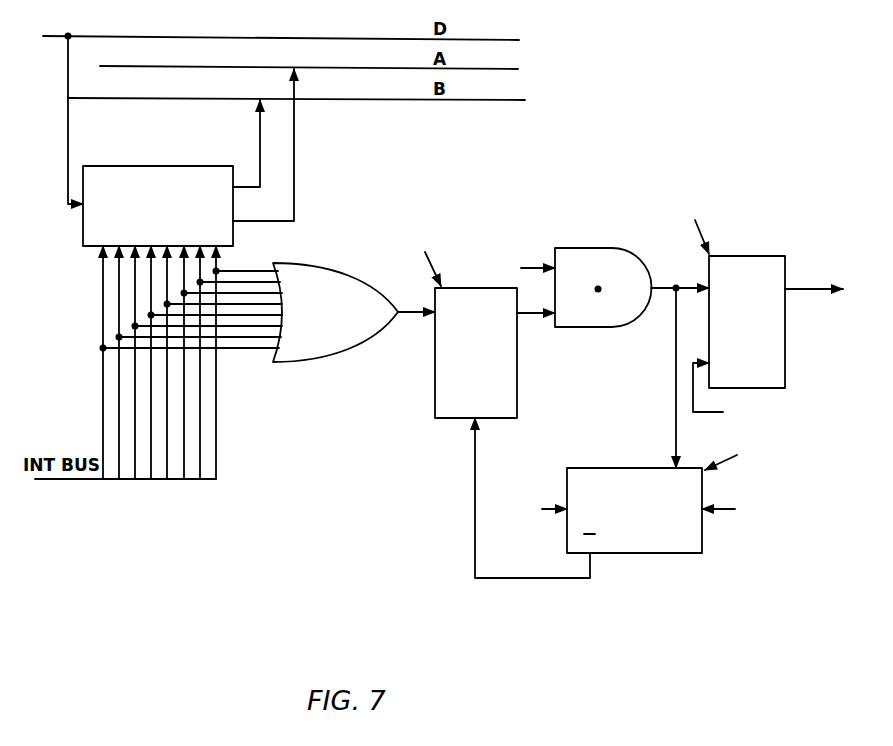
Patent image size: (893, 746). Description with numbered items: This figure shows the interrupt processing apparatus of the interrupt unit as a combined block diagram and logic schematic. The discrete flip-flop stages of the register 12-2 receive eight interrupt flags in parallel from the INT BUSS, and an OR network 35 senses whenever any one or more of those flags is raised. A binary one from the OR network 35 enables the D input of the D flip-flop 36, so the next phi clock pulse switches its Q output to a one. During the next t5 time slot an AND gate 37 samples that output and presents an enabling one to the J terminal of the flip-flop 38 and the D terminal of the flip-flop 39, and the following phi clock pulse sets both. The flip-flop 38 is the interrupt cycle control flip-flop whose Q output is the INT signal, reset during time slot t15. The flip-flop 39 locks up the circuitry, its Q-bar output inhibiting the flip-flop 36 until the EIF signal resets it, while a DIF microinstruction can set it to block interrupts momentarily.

The register 12-2 is at (143, 166).
The OR network 35 is at (320, 362).
The D flip-flop 36 is at (447, 418).
The AND gate 37 is at (615, 248).
The interrupt cycle control flip-flop 38 is at (768, 256).
The flip-flop 39 is at (682, 553).